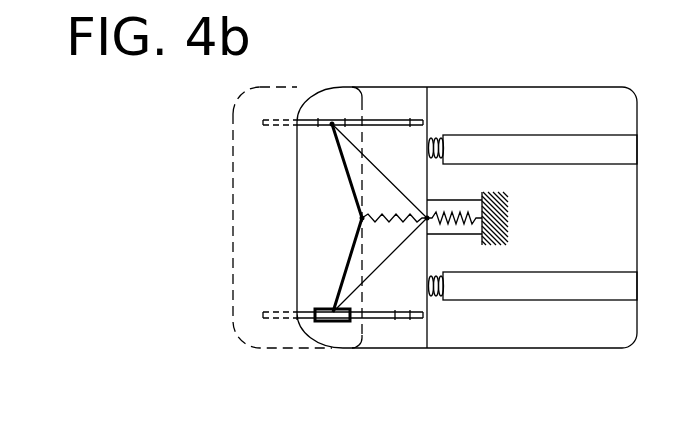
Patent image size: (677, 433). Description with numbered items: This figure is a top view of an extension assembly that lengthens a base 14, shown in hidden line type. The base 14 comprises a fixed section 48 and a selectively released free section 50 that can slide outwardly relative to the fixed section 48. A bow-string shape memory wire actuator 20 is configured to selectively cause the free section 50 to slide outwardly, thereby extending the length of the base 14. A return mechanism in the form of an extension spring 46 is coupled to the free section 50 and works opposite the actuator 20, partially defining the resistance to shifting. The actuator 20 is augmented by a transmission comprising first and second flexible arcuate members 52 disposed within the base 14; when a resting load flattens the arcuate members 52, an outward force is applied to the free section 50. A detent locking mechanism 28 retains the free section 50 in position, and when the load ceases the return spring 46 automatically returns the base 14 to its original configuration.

The base 14 is at (207, 194).
The actuator 20 is at (398, 187).
The detent locking mechanism 28 is at (333, 321).
The return mechanism 46 is at (452, 222).
The fixed section 48 is at (592, 231).
The free section 50 is at (282, 228).
The flexible arcuate members 52 is at (527, 136).